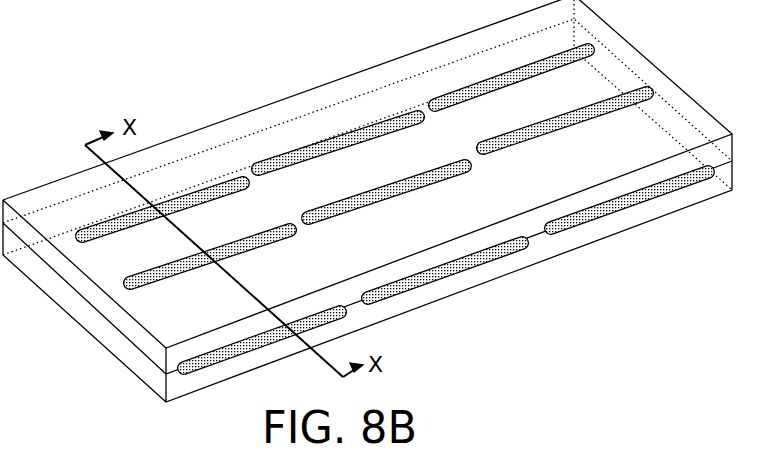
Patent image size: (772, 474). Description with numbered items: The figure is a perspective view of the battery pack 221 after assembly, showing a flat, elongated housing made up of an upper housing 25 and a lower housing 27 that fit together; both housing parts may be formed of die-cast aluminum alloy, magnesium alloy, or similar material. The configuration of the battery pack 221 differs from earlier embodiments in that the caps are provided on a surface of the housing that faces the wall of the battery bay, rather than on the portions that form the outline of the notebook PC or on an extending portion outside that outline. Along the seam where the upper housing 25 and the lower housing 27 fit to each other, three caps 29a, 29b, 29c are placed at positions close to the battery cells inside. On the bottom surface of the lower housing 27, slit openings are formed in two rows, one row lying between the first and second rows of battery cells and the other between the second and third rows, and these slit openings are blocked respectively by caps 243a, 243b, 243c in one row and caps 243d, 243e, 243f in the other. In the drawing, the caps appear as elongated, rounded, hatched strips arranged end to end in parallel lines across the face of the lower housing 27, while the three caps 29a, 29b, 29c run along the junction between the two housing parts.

The upper housing 25 is at (85, 330).
The battery pack 221 is at (162, 131).
The lower housing 27 is at (233, 116).
The cap 29a is at (237, 342).
The cap 29b is at (430, 269).
The cap 29c is at (573, 213).
The cap 243a is at (220, 246).
The cap 243b is at (387, 185).
The cap 243c is at (543, 121).
The cap 243d is at (190, 193).
The cap 243e is at (365, 128).
The cap 243f is at (547, 57).